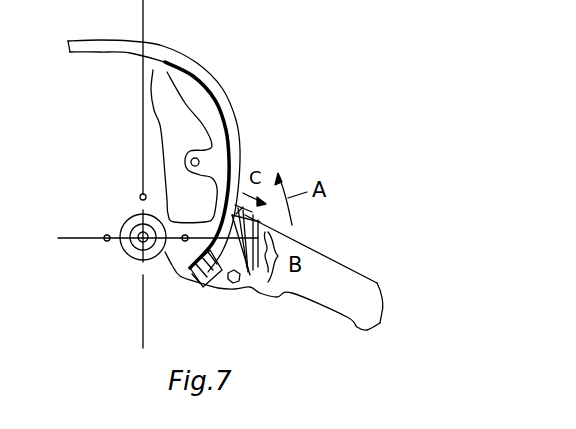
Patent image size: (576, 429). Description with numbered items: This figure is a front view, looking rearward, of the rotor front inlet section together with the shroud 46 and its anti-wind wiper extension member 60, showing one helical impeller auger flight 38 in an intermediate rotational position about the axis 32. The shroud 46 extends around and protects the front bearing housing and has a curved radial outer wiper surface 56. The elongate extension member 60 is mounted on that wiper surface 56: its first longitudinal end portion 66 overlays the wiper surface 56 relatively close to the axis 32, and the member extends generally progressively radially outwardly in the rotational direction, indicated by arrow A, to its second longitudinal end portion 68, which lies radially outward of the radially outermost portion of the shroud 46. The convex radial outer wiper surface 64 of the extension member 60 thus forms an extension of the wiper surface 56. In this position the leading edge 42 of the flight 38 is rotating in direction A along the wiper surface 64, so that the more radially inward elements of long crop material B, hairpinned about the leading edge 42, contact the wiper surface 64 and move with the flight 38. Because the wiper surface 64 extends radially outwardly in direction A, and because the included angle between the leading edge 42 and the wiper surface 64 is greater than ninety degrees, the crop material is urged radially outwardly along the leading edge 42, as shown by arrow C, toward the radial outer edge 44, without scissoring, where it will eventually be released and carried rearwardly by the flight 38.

The axis 32 is at (133, 258).
The helical impeller auger flight 38 is at (380, 326).
The leading edge 42 is at (322, 248).
The radial outer edge 44 is at (383, 322).
The shroud 46 is at (177, 273).
The radial outer wiper surface 56 is at (230, 160).
The anti-wind wiper extension member 60 is at (157, 50).
The radial outer wiper surface 64 is at (232, 122).
The first longitudinal end portion 66 is at (218, 290).
The second longitudinal end portion 68 is at (78, 38).